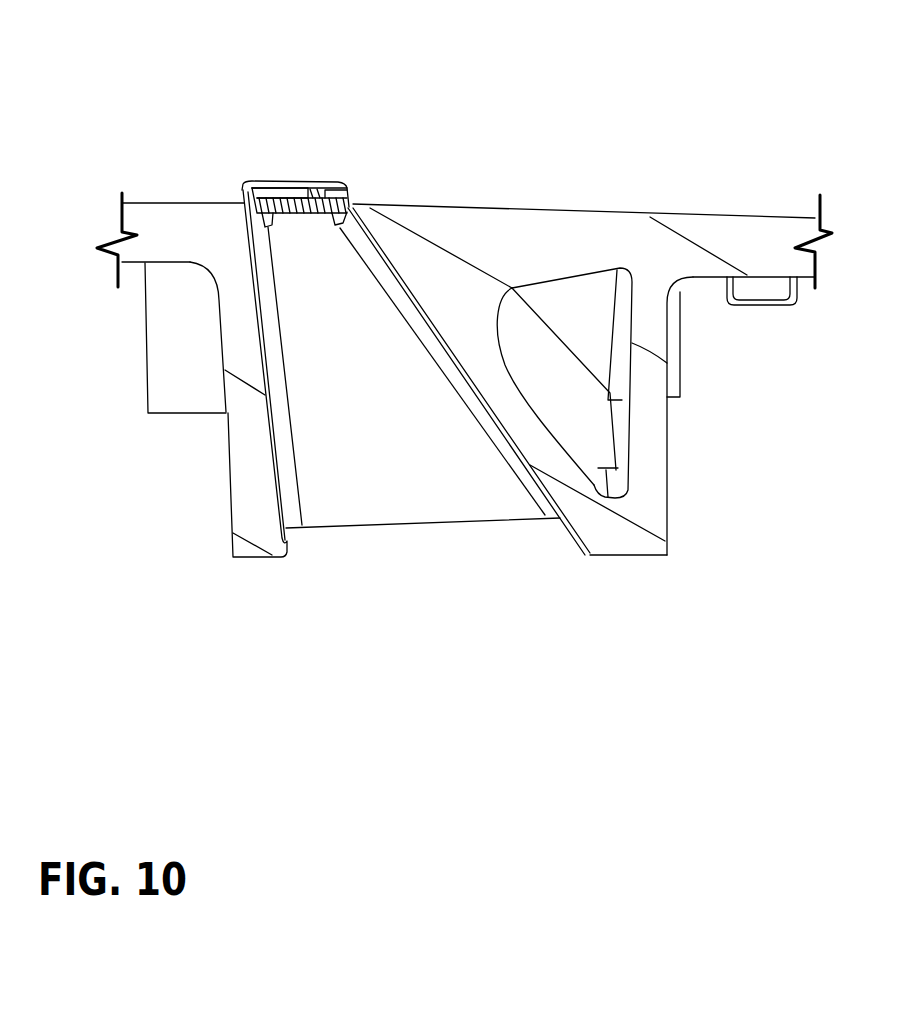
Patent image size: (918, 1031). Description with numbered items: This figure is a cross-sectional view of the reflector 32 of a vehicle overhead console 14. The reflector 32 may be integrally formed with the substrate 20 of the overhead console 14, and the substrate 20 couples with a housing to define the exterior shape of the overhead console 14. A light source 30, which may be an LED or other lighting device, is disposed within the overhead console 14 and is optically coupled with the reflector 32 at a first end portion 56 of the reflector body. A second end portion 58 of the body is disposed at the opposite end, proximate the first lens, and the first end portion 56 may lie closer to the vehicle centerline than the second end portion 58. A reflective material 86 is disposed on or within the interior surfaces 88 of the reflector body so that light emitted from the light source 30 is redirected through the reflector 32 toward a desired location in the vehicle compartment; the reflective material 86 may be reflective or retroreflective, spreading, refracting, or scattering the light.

The overhead console 14 is at (308, 128).
The substrate 20 is at (595, 235).
The light source 30 is at (300, 183).
The reflector 32 is at (350, 482).
The first end portion 56 is at (292, 236).
The second end portion 58 is at (430, 527).
The reflective material 86 is at (288, 538).
The interior surfaces 88 is at (393, 268).